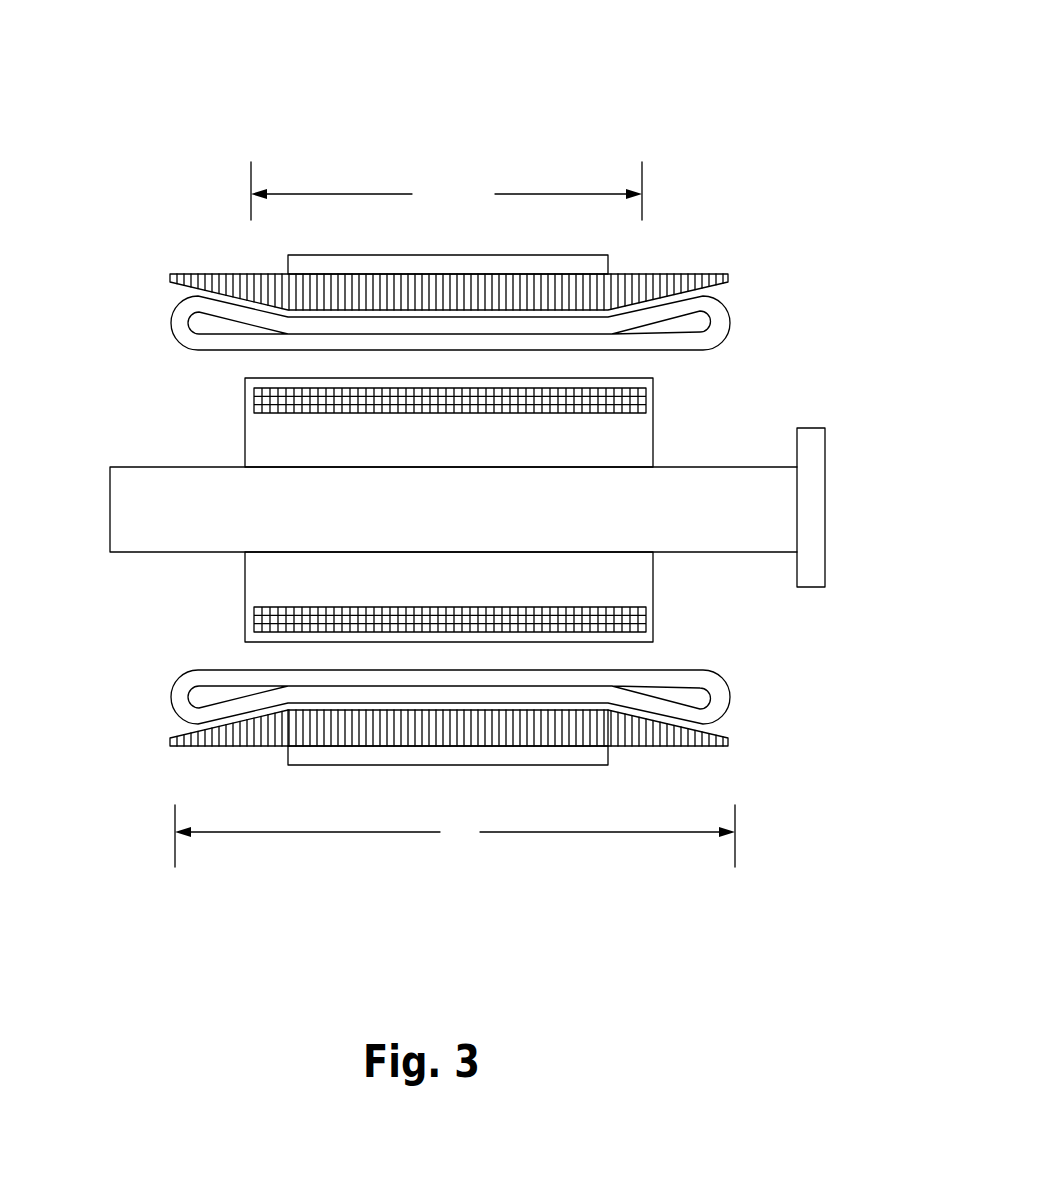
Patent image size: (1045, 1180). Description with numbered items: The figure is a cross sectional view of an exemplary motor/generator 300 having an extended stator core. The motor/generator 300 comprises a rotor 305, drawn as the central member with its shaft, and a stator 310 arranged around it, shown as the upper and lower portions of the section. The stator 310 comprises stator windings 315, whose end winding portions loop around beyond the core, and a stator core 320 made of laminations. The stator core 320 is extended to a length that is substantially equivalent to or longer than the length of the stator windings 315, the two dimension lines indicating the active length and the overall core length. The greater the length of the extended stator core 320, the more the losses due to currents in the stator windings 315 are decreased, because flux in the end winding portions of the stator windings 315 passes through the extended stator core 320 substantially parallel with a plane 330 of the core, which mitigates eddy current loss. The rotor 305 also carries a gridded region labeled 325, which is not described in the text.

The motor/generator 300 is at (570, 117).
The rotor 305 is at (230, 432).
The stator 310 is at (155, 677).
The stator windings 315 is at (718, 674).
The stator core 320 is at (207, 749).
The rotor conductors 325 is at (645, 403).
The plane of the extended stator core 330 is at (731, 748).